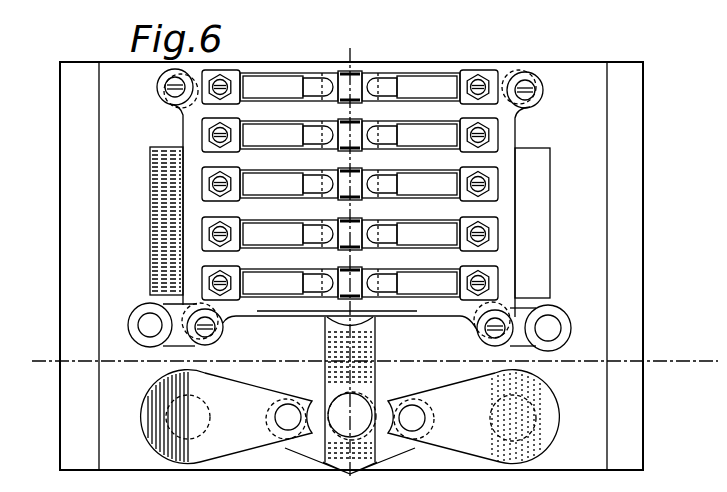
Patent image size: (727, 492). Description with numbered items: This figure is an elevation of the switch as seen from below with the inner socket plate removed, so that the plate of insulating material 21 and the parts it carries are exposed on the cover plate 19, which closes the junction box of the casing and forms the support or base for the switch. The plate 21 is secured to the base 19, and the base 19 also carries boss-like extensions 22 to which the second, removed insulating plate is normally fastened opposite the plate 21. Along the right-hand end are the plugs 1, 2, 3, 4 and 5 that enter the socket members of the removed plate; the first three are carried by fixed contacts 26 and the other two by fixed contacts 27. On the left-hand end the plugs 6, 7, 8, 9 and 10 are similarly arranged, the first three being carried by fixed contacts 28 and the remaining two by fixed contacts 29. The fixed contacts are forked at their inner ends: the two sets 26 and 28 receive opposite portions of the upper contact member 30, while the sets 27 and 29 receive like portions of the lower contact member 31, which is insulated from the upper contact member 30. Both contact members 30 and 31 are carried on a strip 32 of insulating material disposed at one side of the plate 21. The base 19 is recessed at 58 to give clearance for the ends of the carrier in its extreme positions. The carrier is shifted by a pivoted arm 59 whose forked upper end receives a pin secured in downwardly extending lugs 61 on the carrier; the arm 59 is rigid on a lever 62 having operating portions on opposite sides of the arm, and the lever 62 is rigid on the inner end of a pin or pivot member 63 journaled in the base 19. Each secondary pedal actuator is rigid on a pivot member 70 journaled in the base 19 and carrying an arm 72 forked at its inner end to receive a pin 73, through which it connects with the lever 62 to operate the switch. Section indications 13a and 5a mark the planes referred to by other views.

The plug 1 is at (482, 92).
The plug 2 is at (482, 135).
The plug 3 is at (482, 186).
The plug 4 is at (482, 236).
The plug 5 is at (482, 283).
The plug 6 is at (214, 91).
The plug 7 is at (210, 135).
The plug 8 is at (210, 184).
The plug 9 is at (210, 236).
The plug 10 is at (210, 284).
The section line 13a is at (316, 52).
The cover plate 19 is at (648, 418).
The plate of insulating material 21 is at (516, 178).
The boss-like extensions 22 is at (145, 333).
The fixed contacts 26 is at (430, 135).
The fixed contacts 27 is at (430, 258).
The fixed contacts 28 is at (270, 135).
The fixed contacts 29 is at (270, 258).
The upper contact member 30 is at (360, 78).
The lower contact member 31 is at (380, 304).
The strip of insulating material 32 is at (332, 302).
The recess 58 is at (540, 230).
The pivoted arm 59 is at (368, 372).
The downwardly extending lugs 61 is at (357, 321).
The lever 62 is at (306, 447).
The pivot member 63 is at (395, 450).
The pivot member 70 is at (145, 440).
The arm 72 is at (344, 417).
The pin 73 is at (290, 407).
The section line 5a is at (678, 364).